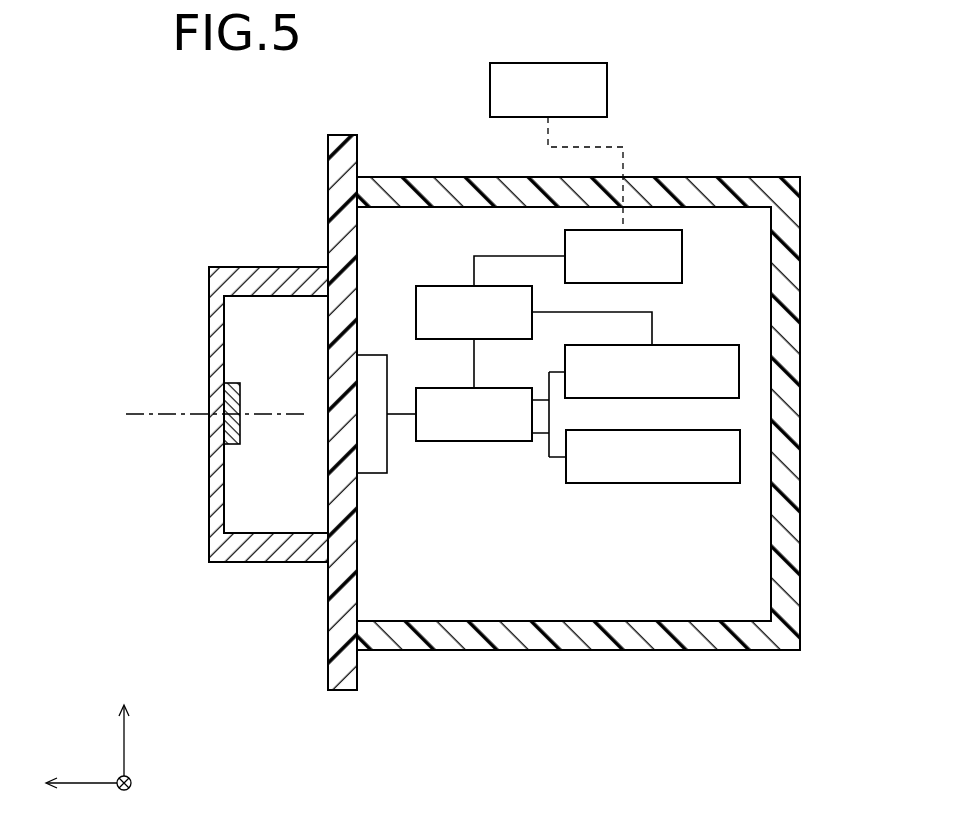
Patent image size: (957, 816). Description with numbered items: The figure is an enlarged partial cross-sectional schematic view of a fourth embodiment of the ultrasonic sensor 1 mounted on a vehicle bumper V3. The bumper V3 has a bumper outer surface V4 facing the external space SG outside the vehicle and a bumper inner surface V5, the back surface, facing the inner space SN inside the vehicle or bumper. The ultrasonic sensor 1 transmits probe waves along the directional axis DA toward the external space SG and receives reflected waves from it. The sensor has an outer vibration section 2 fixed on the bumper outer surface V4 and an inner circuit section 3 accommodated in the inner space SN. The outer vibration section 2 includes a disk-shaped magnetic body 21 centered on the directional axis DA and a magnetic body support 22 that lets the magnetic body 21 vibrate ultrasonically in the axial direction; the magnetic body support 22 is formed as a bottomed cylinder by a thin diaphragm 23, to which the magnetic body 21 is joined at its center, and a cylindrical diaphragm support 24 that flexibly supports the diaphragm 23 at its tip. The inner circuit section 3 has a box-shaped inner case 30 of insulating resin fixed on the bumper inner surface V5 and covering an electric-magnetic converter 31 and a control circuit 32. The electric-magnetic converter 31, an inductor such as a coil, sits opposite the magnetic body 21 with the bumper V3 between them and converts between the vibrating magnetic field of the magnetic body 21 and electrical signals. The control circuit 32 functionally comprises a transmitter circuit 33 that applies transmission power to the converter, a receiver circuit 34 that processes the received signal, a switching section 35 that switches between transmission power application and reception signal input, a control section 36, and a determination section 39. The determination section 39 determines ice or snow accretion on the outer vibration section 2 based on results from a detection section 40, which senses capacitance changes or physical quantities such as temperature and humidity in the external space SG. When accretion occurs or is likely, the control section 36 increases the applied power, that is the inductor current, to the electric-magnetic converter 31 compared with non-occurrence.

The ultrasonic sensor 1 is at (176, 117).
The outer vibration section 2 is at (207, 266).
The inner circuit section 3 is at (796, 653).
The magnetic body 21 is at (228, 402).
The magnetic body support 22 is at (215, 535).
The diaphragm 23 is at (217, 328).
The diaphragm support 24 is at (247, 562).
The inner case 30 is at (593, 642).
The electric-magnetic converter 31 is at (378, 466).
The control circuit 32 is at (725, 228).
The transmitter circuit 33 is at (736, 377).
The receiver circuit 34 is at (738, 458).
The switching section 35 is at (478, 441).
The control section 36 is at (440, 285).
The determination section 39 is at (662, 230).
The detection section 40 is at (607, 90).
The bumper V3 is at (345, 152).
The bumper outer surface V4 is at (318, 692).
The bumper inner surface V5 is at (340, 692).
The directional axis DA is at (138, 414).
The external space SG is at (38, 502).
The inner space SN is at (901, 591).